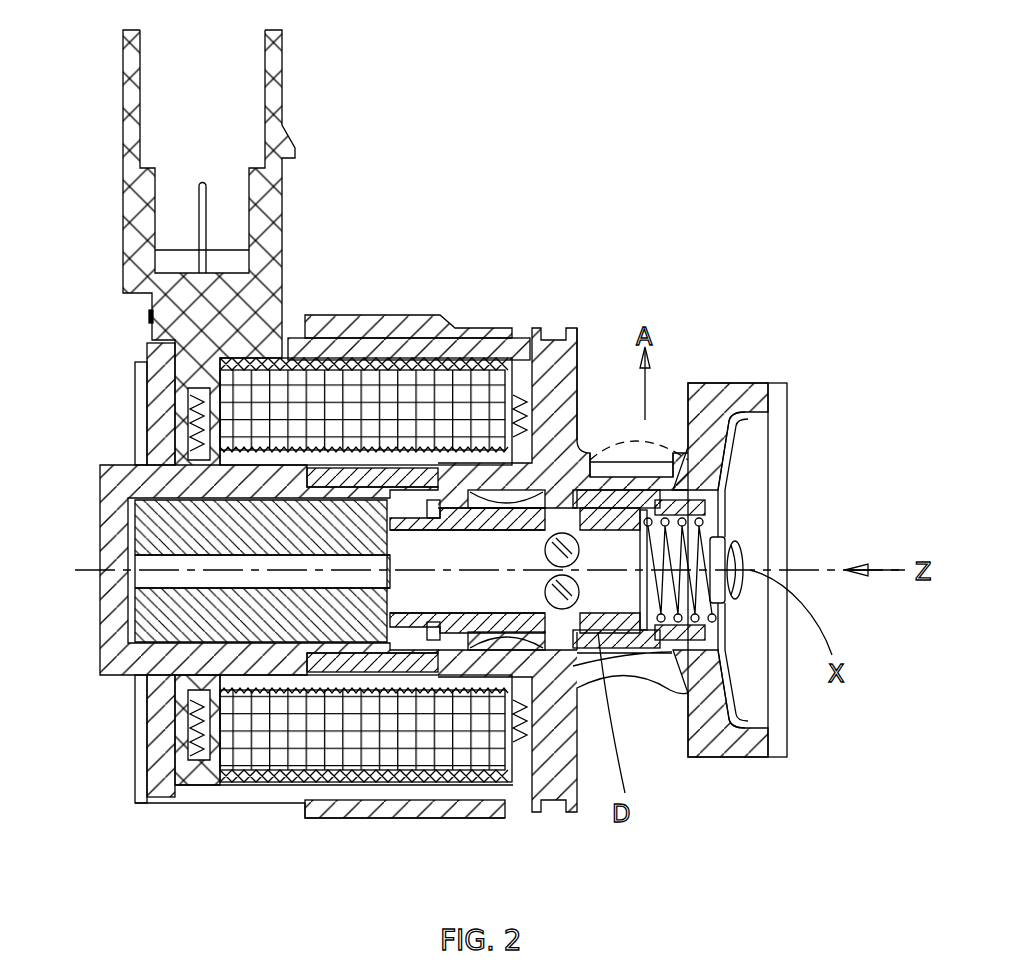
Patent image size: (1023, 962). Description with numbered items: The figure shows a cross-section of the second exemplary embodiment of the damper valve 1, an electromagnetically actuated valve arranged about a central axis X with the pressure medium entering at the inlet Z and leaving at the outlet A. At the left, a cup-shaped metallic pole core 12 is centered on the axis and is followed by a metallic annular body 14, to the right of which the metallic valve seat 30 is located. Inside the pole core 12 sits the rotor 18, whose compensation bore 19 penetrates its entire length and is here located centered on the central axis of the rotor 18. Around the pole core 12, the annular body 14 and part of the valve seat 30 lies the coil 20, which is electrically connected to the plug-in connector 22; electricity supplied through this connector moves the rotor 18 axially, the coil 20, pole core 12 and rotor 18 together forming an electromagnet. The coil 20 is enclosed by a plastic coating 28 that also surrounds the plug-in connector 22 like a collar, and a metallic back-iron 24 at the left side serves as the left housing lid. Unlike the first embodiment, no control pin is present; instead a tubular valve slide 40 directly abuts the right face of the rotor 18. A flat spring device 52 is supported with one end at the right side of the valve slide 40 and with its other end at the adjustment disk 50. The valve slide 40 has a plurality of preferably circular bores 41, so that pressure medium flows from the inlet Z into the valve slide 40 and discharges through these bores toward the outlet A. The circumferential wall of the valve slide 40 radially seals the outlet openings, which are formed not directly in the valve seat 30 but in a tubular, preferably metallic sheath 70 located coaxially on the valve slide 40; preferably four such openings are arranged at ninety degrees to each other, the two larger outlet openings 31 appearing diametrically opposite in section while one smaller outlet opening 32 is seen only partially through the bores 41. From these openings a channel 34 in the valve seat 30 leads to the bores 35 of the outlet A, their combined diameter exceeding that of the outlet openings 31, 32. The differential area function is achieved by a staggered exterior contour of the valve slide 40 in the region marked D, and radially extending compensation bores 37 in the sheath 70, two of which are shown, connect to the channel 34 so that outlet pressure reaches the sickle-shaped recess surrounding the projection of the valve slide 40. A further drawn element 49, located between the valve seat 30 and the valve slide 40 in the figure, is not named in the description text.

The damper valve 1 is at (612, 95).
The pole core 12 is at (105, 612).
The annular body 14 is at (313, 673).
The rotor 18 is at (175, 630).
The compensation bore 19 is at (145, 565).
The coil 20 is at (320, 392).
The plug-in connector 22 is at (207, 190).
The back-iron 24 is at (162, 787).
The plastic coating 28 is at (284, 200).
The valve seat 30 is at (572, 350).
The larger outlet opening 31 is at (493, 475).
The smaller outlet opening 32 is at (628, 578).
The channel 34 is at (550, 380).
The bore 35 is at (614, 463).
The compensation bore 37 is at (655, 495).
The valve slide 40 is at (440, 627).
The bore 41 is at (567, 632).
The ring 49 is at (498, 490).
The adjustment disk 50 is at (746, 427).
The spring device 52 is at (653, 663).
The sheath 70 is at (478, 645).